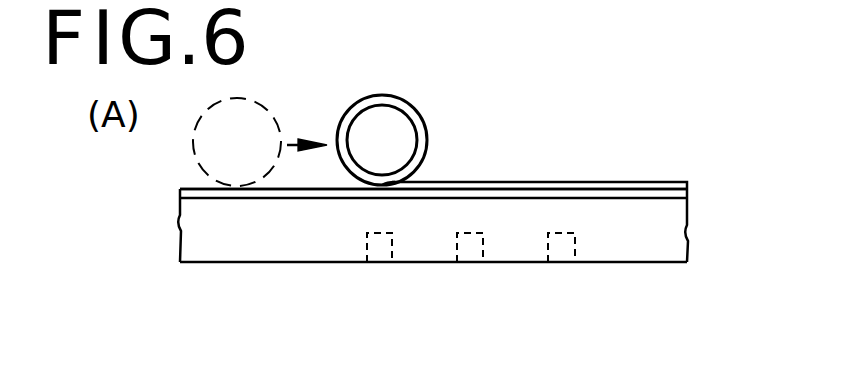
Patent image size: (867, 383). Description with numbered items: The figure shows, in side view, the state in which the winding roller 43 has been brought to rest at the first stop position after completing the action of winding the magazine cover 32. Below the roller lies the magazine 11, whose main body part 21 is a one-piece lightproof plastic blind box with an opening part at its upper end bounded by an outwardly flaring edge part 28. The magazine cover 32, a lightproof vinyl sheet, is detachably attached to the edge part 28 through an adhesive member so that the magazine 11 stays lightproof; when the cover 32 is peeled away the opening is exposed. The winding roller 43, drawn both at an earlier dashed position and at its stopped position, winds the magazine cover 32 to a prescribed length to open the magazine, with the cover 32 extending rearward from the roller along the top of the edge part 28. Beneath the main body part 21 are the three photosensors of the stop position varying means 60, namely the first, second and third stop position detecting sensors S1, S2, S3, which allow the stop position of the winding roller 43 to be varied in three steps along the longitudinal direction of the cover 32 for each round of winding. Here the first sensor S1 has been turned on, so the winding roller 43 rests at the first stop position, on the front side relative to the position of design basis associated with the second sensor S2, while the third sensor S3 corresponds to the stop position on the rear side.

The magazine 11 is at (710, 196).
The main body part of the magazine 21 is at (677, 236).
The edge part 28 is at (308, 192).
The magazine cover 32 is at (612, 182).
The winding roller 43 is at (403, 149).
The stop position varying means 60 is at (376, 205).
The first stop position detecting sensor S1 is at (382, 265).
The second stop position detecting sensor S2 is at (471, 265).
The third stop position detecting sensor S3 is at (565, 265).